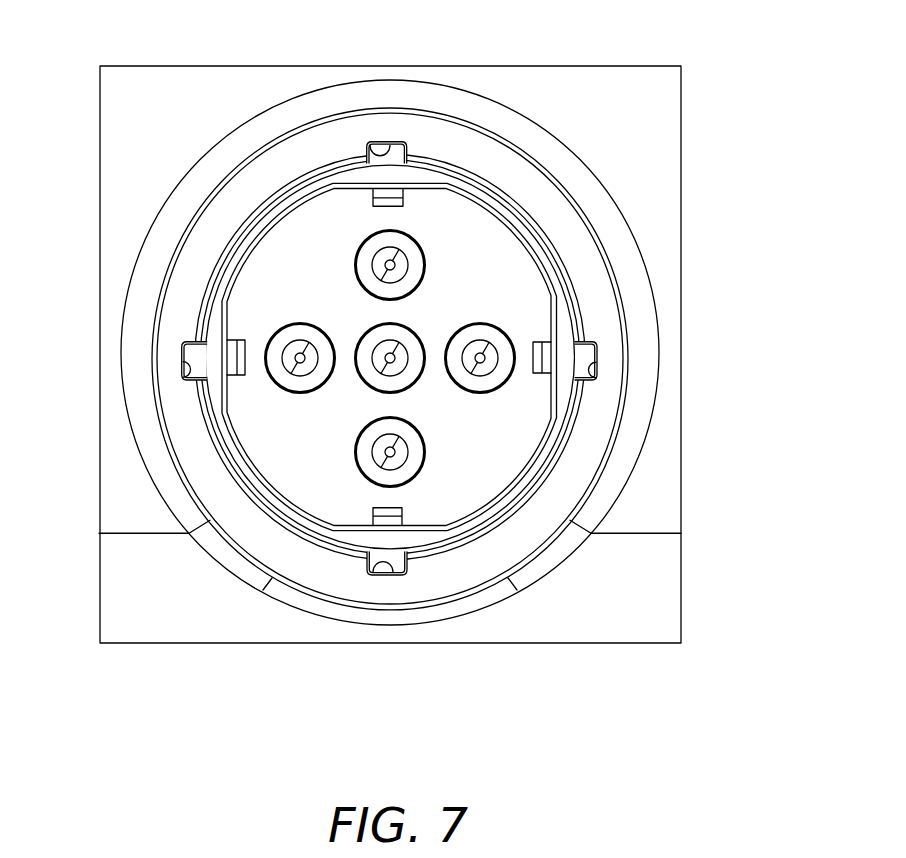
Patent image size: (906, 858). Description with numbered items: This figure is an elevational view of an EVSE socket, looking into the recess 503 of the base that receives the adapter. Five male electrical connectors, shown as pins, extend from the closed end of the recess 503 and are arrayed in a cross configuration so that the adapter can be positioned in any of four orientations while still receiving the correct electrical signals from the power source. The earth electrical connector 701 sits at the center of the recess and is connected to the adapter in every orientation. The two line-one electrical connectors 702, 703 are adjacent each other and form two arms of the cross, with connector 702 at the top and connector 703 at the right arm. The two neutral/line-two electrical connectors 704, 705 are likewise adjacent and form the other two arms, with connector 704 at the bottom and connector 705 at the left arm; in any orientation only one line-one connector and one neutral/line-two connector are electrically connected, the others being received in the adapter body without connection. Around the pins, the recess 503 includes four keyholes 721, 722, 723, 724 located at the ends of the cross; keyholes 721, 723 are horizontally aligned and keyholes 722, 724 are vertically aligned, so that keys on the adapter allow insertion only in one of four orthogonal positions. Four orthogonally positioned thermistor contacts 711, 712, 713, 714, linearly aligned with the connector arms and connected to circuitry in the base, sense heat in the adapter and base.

The recess 503 is at (262, 107).
The earth electrical connector 701 is at (398, 345).
The Line 1 electrical connector 702 is at (472, 176).
The Line 1 electrical connector 703 is at (492, 330).
The Neutral/Line 2 electrical connector 704 is at (413, 465).
The Neutral/Line 2 electrical connector 705 is at (282, 367).
The thermistor contact 711 is at (386, 206).
The thermistor contact 712 is at (545, 361).
The thermistor contact 713 is at (388, 518).
The thermistor contact 714 is at (243, 340).
The keyhole 721 is at (597, 383).
The keyhole 722 is at (368, 573).
The keyhole 723 is at (185, 383).
The keyhole 724 is at (366, 142).